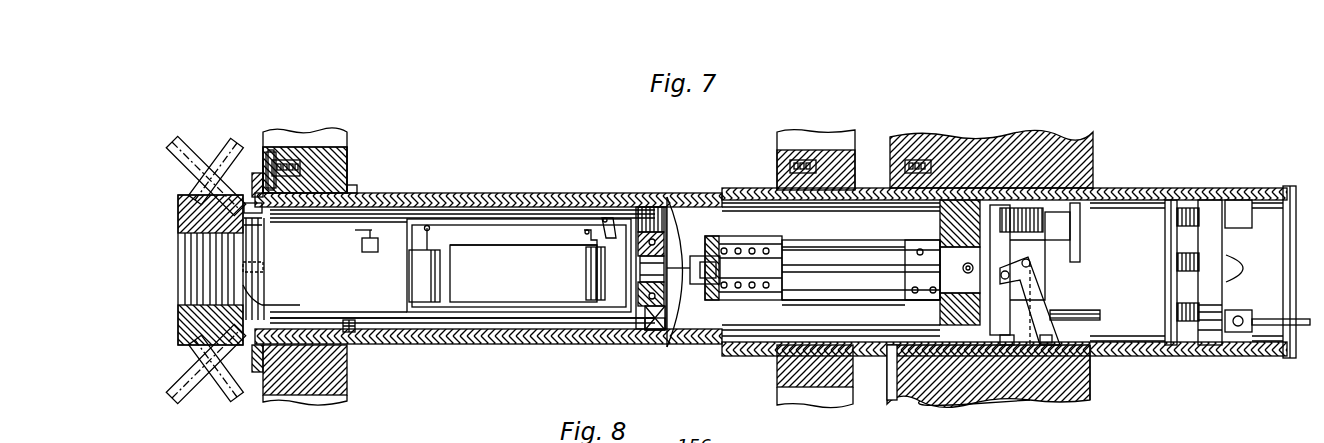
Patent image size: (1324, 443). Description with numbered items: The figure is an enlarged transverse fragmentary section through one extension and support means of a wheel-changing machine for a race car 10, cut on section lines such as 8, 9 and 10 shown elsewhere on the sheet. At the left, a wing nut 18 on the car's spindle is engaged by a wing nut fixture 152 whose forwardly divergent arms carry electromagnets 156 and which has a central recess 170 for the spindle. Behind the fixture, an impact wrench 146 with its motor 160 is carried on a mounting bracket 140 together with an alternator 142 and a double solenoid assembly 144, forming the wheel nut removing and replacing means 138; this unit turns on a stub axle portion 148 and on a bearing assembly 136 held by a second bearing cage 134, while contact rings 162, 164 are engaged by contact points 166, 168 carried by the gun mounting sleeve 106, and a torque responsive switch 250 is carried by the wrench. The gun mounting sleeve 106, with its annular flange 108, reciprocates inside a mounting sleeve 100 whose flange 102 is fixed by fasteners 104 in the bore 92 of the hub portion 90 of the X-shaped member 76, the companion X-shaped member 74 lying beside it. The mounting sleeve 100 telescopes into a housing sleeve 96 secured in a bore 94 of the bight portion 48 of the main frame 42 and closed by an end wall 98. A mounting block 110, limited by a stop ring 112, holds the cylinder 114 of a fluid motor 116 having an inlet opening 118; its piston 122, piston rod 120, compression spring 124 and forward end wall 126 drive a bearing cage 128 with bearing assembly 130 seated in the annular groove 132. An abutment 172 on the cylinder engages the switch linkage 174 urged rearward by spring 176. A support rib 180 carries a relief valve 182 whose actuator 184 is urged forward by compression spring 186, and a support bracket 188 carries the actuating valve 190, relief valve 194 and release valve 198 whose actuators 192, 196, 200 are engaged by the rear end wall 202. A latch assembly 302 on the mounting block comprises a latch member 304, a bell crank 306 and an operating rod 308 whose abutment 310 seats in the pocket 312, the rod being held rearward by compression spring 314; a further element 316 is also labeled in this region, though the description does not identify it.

The section line 8- 8 is at (240, 92).
The section line 9- 9 is at (808, 140).
The race car 10 is at (1292, 157).
The wing nut 18 is at (180, 330).
The main frame 42 is at (1091, 389).
The bight portion 48 is at (1082, 404).
The X-shaped member 74 is at (778, 136).
The X-shaped member 76 is at (349, 137).
The hub portion 90 is at (348, 152).
The bore 92 is at (351, 190).
The bore 94 is at (1050, 190).
The housing sleeve 96 is at (1170, 358).
The end wall 98 is at (1290, 187).
The mounting sleeve 100 is at (723, 195).
The flange 102 is at (299, 171).
The fasteners 104 is at (291, 160).
The gun mounting sleeve 106 is at (523, 338).
The annular flange 108 is at (259, 172).
The mounting block 110 is at (960, 175).
The stop ring 112 is at (928, 190).
The cylinder 114 is at (860, 246).
The fluid motor 116 is at (802, 302).
The inlet opening 118 is at (930, 252).
The piston rod 120 is at (750, 248).
The piston 122 is at (912, 274).
The compression spring 124 is at (800, 249).
The forward end wall 126 is at (708, 286).
The bearing cage 128 is at (662, 208).
The bearing assembly 130 is at (681, 340).
The annular groove 132 is at (651, 332).
The second bearing cage 134 is at (300, 345).
The bearing assembly 136 is at (402, 222).
The wheel nut removing and replacing means 138 is at (487, 233).
The mounting bracket 140 is at (523, 273).
The alternator 142 is at (510, 246).
The double solenoid assembly 144 is at (434, 248).
The electric impact wrench 146 is at (423, 220).
The stub axle portion 148 is at (600, 270).
The wing nut fixture 152 is at (172, 140).
The electromagnet 156 is at (212, 150).
The motor 160 is at (386, 292).
The contact ring 162 is at (252, 248).
The contact ring 164 is at (255, 275).
The contact point 166 is at (252, 211).
The contact point 168 is at (353, 258).
The recess 170 is at (190, 275).
The abutment 172 is at (714, 246).
The switch linkage 174 is at (612, 218).
The spring 176 is at (641, 205).
The support rib 180 is at (1080, 322).
The relief valve 182 is at (1076, 229).
The actuator 184 is at (1030, 233).
The compression spring 186 is at (1025, 208).
The support bracket 188 is at (1220, 254).
The actuating valve 190 is at (1238, 205).
The actuator 192 is at (1181, 207).
The relief valve 194 is at (1244, 277).
The actuator 196 is at (1178, 261).
The release valve 198 is at (1267, 312).
The actuator 200 is at (1178, 316).
The rear end wall 202 is at (1168, 279).
The torque responsive switch 250 is at (340, 290).
The latch assembly 302 is at (1042, 267).
The latch member 304 is at (1003, 350).
The bell crank 306 is at (1046, 344).
The operating rod 308 is at (748, 348).
The abutment 310 is at (352, 335).
The pocket 312 is at (612, 338).
The compression spring 314 is at (1010, 346).
The block 316 is at (965, 350).